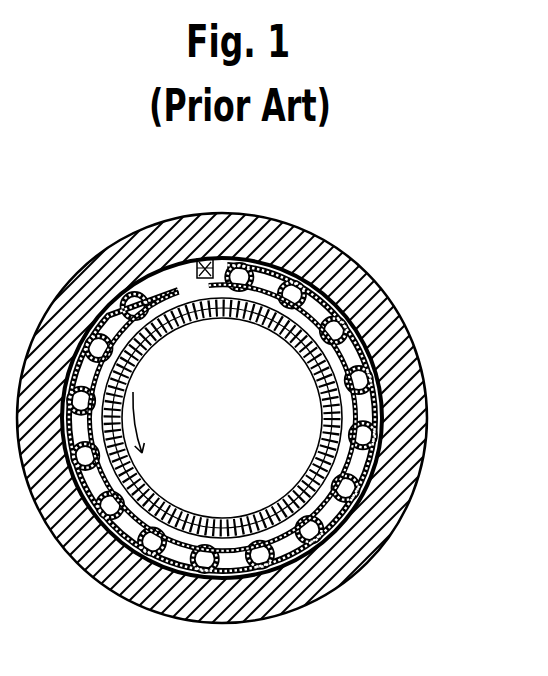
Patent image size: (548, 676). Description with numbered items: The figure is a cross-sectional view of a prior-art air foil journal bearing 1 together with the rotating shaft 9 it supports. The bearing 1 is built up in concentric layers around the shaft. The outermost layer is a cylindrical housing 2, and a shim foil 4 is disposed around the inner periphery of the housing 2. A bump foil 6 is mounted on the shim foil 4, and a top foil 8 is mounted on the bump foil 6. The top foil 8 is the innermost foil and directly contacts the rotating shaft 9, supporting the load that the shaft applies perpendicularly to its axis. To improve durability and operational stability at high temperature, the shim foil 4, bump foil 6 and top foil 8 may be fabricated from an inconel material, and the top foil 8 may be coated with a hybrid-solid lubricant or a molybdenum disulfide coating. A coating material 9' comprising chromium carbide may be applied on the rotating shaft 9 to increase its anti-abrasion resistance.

The air foil journal bearing 1 is at (340, 215).
The cylindrical housing 2 is at (383, 318).
The shim foil 4 is at (383, 378).
The bump foil 6 is at (357, 507).
The top foil 8 is at (313, 562).
The rotating shaft 9 is at (208, 374).
The coating material 9' is at (298, 245).